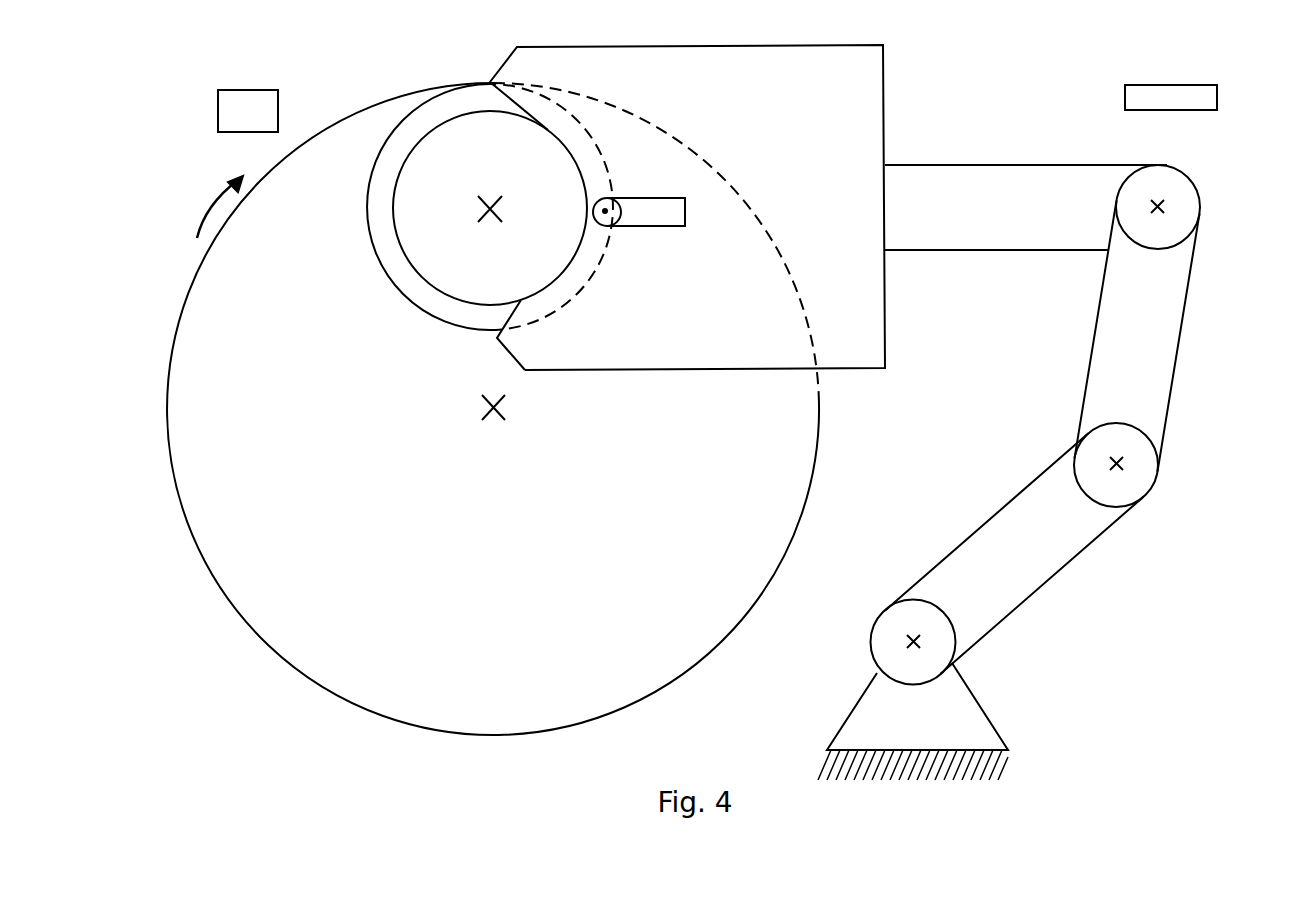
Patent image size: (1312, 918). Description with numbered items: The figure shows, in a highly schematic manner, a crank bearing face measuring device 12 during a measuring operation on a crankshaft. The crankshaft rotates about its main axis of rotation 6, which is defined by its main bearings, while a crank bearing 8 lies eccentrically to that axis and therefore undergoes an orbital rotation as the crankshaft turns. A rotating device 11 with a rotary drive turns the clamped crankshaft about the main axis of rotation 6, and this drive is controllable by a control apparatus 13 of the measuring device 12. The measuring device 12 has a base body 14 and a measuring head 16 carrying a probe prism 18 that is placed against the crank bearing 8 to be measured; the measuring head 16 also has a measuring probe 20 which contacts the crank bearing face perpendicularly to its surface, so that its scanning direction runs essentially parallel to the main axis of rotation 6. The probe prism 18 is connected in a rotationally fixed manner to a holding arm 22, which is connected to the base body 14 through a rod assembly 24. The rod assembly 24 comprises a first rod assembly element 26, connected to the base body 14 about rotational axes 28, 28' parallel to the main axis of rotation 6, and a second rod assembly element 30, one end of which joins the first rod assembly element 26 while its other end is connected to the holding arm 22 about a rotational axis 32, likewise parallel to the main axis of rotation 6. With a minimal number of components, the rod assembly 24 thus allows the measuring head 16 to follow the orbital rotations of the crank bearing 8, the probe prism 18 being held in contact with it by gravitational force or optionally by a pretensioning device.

The main axis of rotation 6 is at (487, 407).
The crank bearing 8 is at (433, 130).
The device for rotating the crankshaft 11 is at (243, 90).
The crank bearing face measuring device 12 is at (1032, 112).
The control apparatus 13 is at (1138, 85).
The base body 14 is at (990, 760).
The measuring head 16 is at (912, 118).
The probe prism 18 is at (523, 323).
The measuring probe 20 is at (617, 215).
The holding arm 22 is at (950, 233).
The rod assembly 24 is at (1034, 425).
The first rod assembly element 26 is at (1030, 580).
The rotational axis 28 is at (877, 642).
The rotational axis 28' is at (1065, 465).
The second rod assembly element 30 is at (1165, 355).
The rotational axis 32 is at (1162, 210).